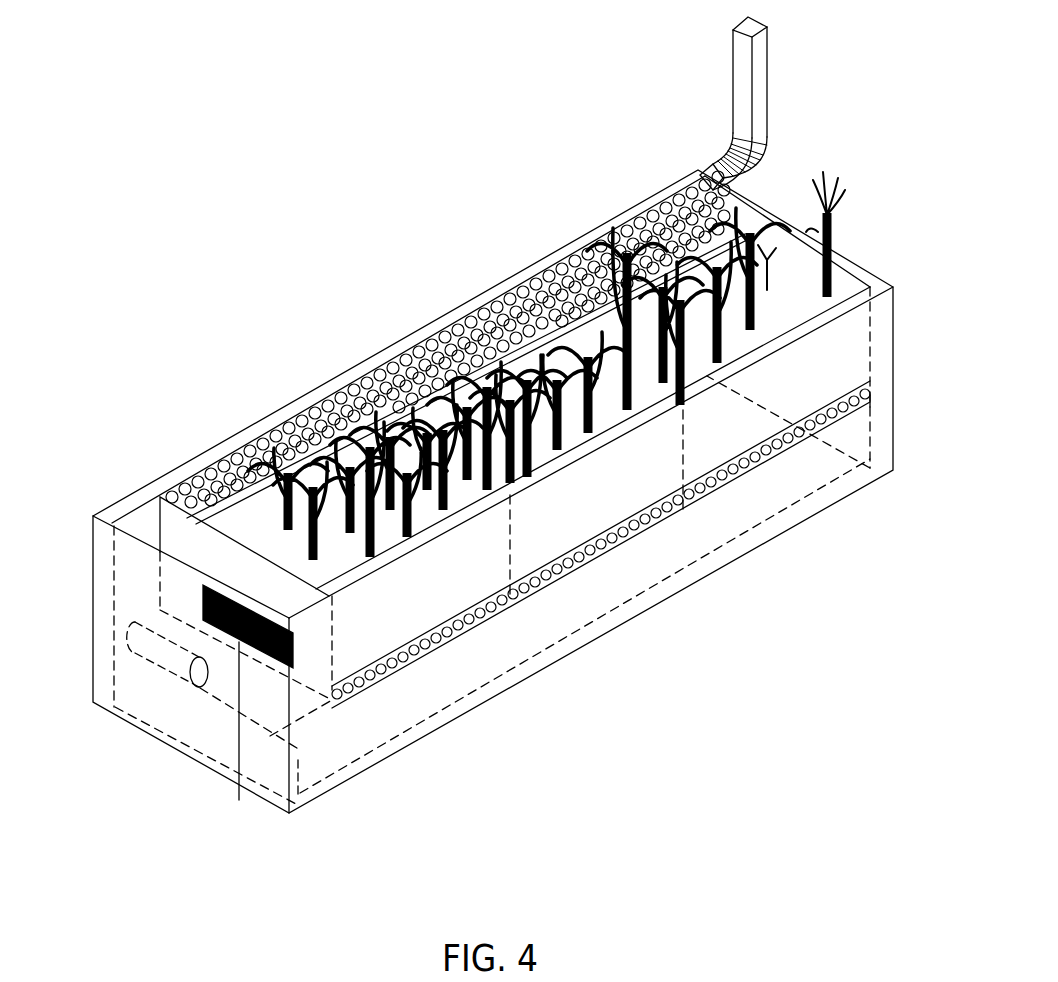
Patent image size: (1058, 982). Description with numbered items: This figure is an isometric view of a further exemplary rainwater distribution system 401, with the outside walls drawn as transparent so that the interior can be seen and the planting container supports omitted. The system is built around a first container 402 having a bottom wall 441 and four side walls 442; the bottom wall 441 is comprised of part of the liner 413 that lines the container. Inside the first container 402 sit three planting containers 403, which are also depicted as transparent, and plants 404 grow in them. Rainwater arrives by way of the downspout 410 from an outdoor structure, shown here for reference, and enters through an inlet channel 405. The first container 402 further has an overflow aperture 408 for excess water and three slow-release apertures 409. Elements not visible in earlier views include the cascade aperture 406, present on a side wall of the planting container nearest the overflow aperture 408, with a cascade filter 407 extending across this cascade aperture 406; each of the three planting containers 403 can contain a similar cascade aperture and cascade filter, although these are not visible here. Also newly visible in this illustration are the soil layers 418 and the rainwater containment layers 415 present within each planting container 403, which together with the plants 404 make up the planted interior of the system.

The rainwater distribution system 401 is at (323, 205).
The first container 402 is at (788, 506).
The planting containers 403 is at (783, 330).
The plants 404 is at (722, 268).
The inlet channel 405 is at (292, 468).
The cascade aperture 406 is at (198, 611).
The cascade filter 407 is at (239, 800).
The overflow aperture 408 is at (185, 672).
The slow-release apertures 409 is at (313, 798).
The downspout 410 is at (767, 136).
The liner 413 is at (147, 527).
The rainwater containment layers 415 is at (380, 690).
The soil layers 418 is at (417, 630).
The bottom wall 441 is at (547, 650).
The side walls 442 is at (875, 410).